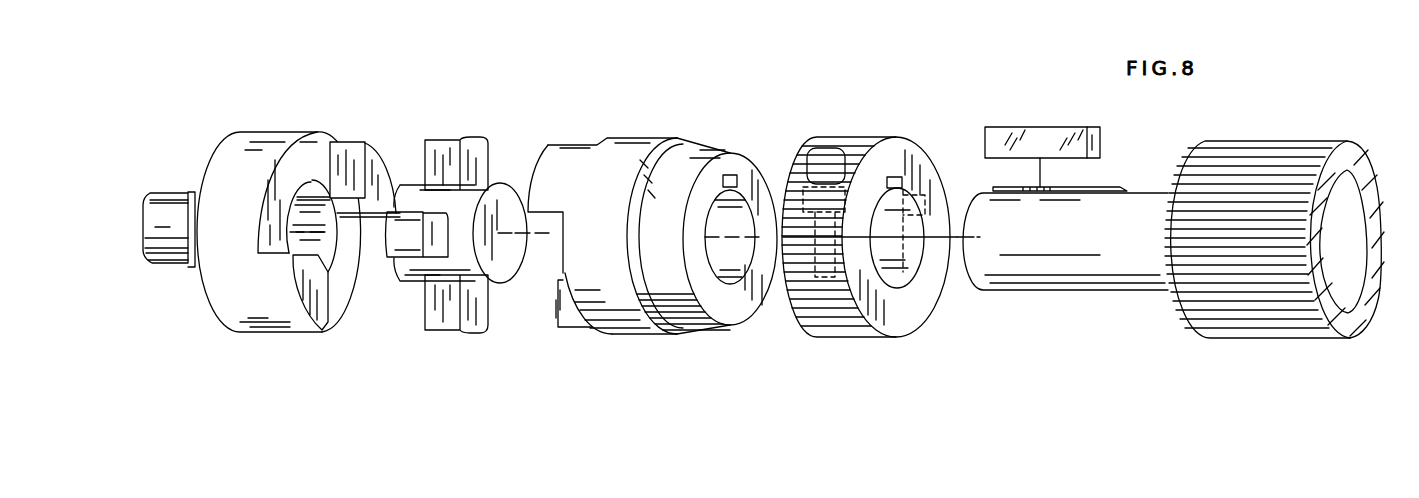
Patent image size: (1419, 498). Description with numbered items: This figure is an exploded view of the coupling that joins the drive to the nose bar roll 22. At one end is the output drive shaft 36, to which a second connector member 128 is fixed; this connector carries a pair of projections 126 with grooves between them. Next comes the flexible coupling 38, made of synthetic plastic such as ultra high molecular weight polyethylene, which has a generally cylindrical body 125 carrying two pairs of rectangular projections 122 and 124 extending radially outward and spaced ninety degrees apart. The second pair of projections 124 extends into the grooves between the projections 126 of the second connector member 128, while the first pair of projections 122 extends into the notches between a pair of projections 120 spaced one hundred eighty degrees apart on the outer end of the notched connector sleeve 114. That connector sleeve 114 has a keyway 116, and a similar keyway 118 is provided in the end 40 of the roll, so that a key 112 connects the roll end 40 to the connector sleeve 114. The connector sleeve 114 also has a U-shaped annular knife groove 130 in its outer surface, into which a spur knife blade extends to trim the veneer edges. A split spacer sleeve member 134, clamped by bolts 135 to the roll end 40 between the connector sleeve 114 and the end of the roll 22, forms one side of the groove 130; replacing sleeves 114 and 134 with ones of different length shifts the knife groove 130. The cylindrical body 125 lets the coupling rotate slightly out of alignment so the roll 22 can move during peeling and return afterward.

The nose bar roll 22 is at (1284, 146).
The output drive shaft 36 is at (165, 207).
The flexible coupling 38 is at (447, 211).
The end of the nose bar roll 40 is at (1067, 262).
The key 112 is at (1035, 128).
The notched connector sleeve 114 is at (602, 225).
The keyway 116 is at (735, 172).
The keyway 118 is at (1010, 188).
The projections 120 is at (545, 165).
The projections 122 is at (433, 158).
The projections 124 is at (383, 248).
The body 125 is at (505, 267).
The projections 126 is at (367, 160).
The second connector member 128 is at (258, 138).
The knife groove 130 is at (702, 209).
The split spacer sleeve member 134 is at (864, 219).
The bolts 135 is at (813, 248).